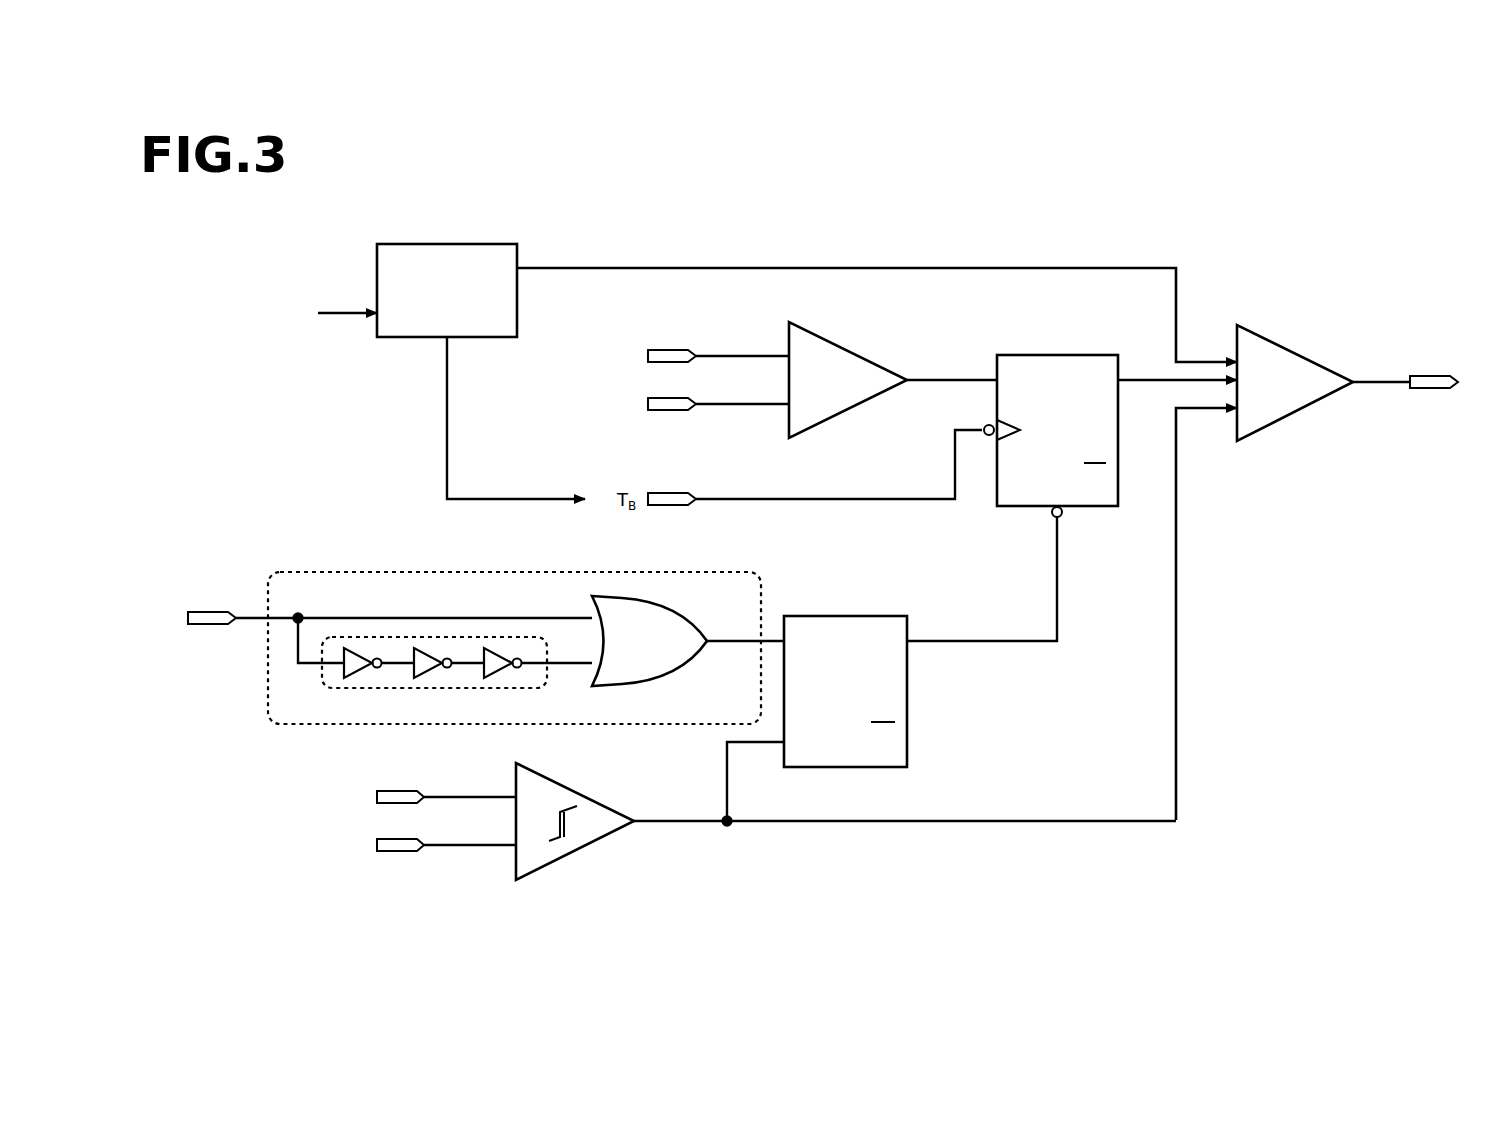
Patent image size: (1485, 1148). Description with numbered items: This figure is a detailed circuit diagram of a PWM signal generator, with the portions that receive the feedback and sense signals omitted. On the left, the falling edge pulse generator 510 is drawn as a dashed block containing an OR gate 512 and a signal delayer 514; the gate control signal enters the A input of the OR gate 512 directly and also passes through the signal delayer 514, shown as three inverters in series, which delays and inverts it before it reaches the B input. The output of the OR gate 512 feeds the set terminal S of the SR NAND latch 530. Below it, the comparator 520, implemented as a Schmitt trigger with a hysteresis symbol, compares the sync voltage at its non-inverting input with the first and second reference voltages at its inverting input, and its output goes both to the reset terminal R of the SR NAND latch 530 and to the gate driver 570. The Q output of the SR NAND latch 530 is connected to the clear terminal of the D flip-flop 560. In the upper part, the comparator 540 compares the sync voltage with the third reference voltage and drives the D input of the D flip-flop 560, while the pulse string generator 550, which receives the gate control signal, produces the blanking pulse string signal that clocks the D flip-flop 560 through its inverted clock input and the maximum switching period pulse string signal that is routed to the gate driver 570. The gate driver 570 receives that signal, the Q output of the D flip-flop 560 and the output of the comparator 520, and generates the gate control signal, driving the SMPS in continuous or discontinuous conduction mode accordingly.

The falling edge pulse generator 510 is at (462, 630).
The OR gate 512 is at (685, 622).
The signal delayer 514 is at (547, 686).
The comparator 520 is at (565, 785).
The SR NAND latch 530 is at (907, 718).
The comparator 540 is at (835, 345).
The pulse string generator 550 is at (377, 268).
The D flip-flop 560 is at (1080, 355).
The gate driver 570 is at (1287, 346).